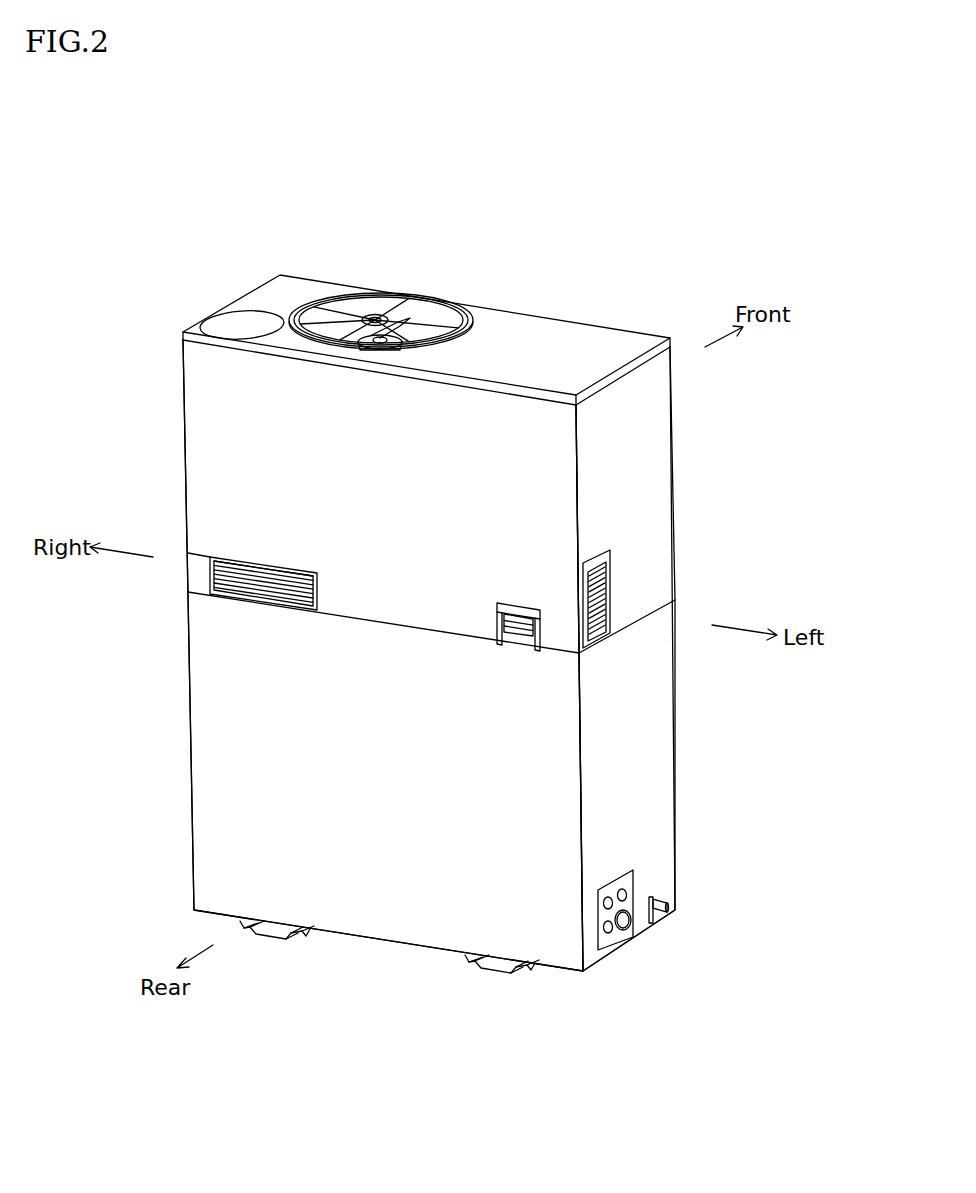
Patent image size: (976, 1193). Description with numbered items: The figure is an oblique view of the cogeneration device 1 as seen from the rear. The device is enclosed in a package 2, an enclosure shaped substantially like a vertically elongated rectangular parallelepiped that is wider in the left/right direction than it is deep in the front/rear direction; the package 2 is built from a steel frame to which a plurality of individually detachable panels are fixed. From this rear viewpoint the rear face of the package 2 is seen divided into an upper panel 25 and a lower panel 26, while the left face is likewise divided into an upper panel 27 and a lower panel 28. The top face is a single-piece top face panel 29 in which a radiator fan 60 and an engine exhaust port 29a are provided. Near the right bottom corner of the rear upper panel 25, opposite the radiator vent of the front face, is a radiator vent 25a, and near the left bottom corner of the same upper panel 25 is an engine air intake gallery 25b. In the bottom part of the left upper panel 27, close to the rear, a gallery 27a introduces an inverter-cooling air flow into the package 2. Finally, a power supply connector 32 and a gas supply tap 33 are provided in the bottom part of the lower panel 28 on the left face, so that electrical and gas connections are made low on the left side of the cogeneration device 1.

The cogeneration device 1 is at (604, 236).
The package 2 is at (341, 272).
The radiator fan 60 is at (417, 327).
The top face panel 29 is at (525, 330).
The engine exhaust port 29a is at (228, 325).
The upper panel 25 is at (213, 440).
The radiator vent 25a is at (236, 598).
The engine air intake gallery 25b is at (517, 637).
The lower panel 26 is at (215, 768).
The upper panel 27 is at (653, 465).
The gallery 27a is at (607, 605).
The lower panel 28 is at (660, 783).
The power supply connector 32 is at (615, 940).
The gas supply tap 33 is at (668, 907).